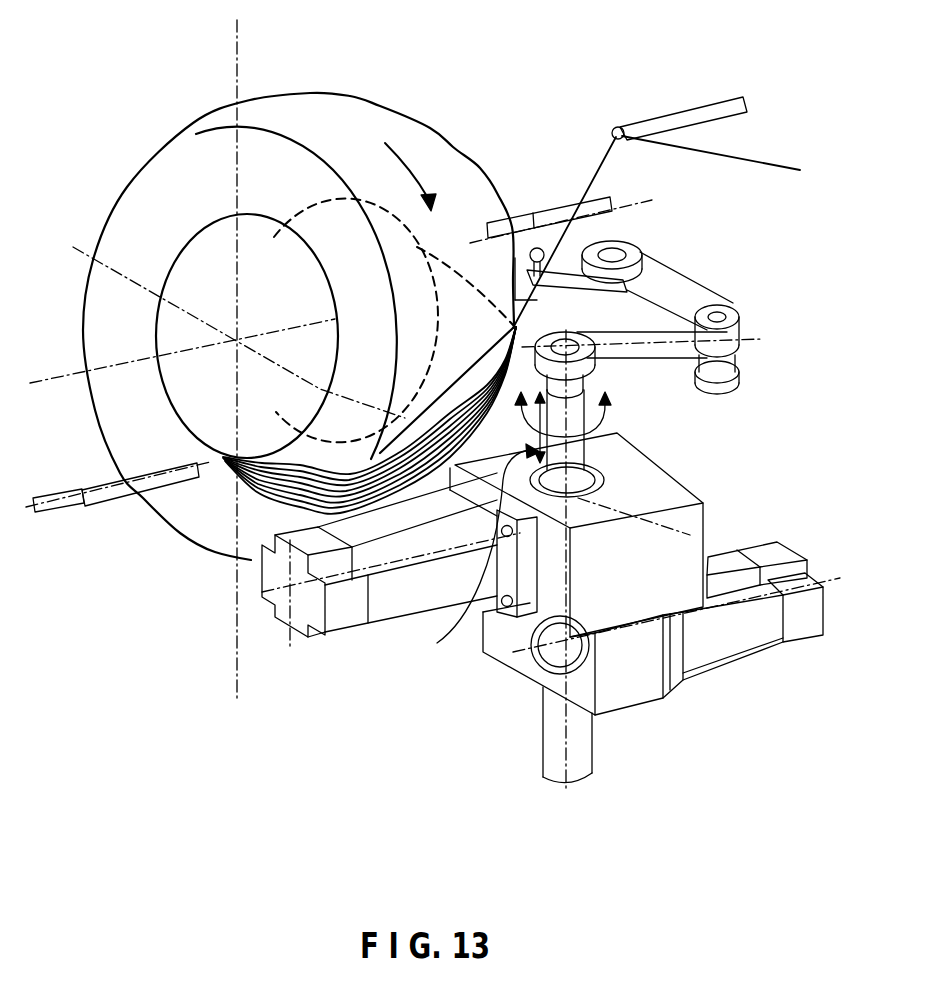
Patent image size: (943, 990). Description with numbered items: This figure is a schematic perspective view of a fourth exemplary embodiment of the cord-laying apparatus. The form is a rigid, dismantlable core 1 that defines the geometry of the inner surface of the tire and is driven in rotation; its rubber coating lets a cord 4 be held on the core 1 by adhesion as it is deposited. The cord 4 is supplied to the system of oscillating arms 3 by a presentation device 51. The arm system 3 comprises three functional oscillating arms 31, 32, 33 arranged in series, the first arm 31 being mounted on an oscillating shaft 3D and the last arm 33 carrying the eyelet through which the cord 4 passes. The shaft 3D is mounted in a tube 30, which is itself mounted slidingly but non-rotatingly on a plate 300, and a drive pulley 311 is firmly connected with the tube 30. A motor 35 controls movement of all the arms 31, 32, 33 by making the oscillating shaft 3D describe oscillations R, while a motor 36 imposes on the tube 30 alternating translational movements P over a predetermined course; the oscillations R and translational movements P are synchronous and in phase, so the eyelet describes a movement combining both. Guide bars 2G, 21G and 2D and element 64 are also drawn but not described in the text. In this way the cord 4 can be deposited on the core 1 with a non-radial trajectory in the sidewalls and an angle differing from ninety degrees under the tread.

The core 1 is at (443, 152).
The guide bar 2G is at (104, 508).
The guide bar holder 21G is at (187, 483).
The drive bar 2D is at (538, 212).
The cord 4 is at (615, 127).
The presentation device 51 is at (695, 136).
The pin 64 is at (523, 250).
The oscillating arm 33 is at (612, 224).
The oscillating arm 32 is at (663, 283).
The oscillating arm 31 is at (740, 378).
The oscillating shaft 3D is at (618, 362).
The drive pulley 311 is at (600, 420).
The oscillations R is at (623, 457).
The tube 30 is at (712, 505).
The translational movements P is at (479, 557).
The motor 35 is at (402, 603).
The motor 36 is at (727, 648).
The plate 300 is at (690, 552).
The system of oscillating arms 3 is at (756, 285).